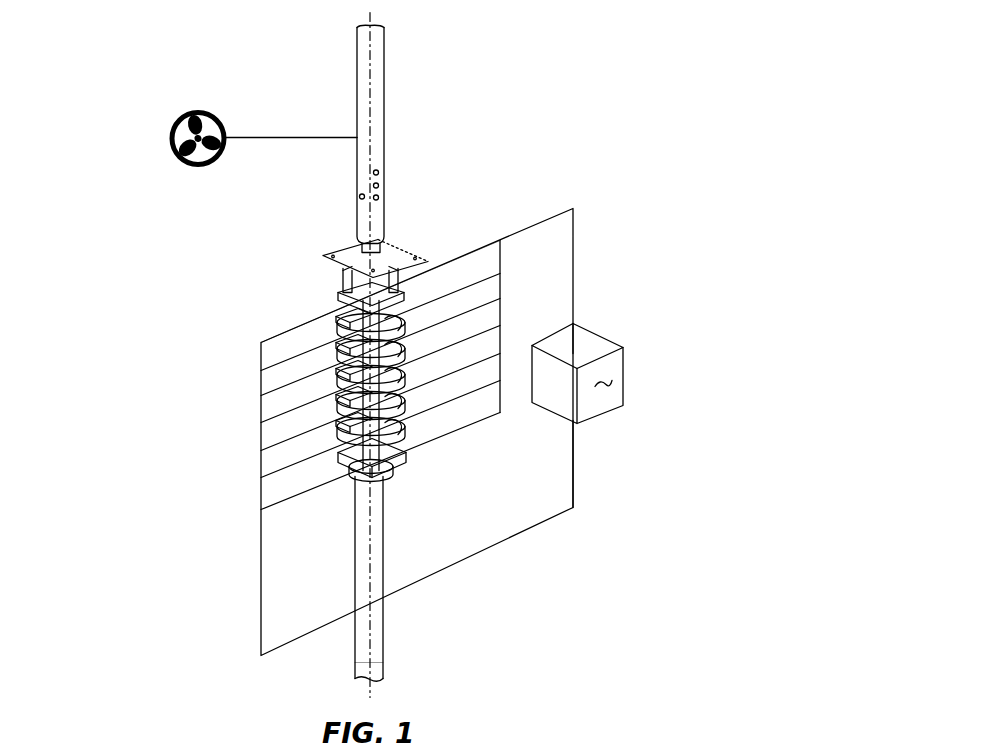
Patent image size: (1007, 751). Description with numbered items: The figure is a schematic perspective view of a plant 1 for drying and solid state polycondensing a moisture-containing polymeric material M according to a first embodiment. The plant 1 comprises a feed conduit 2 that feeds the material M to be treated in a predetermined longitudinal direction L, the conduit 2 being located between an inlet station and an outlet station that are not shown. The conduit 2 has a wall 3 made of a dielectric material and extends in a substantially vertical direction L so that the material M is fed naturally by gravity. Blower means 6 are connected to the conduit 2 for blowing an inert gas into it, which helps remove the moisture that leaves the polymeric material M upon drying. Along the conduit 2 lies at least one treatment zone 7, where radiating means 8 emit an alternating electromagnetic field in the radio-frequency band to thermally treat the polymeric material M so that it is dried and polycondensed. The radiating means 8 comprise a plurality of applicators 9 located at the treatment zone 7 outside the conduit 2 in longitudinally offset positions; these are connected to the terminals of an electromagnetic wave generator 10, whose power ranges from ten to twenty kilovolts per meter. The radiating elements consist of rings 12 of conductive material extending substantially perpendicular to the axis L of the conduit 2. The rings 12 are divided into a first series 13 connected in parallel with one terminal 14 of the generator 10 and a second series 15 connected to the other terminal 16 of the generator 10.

The plant 1 is at (592, 120).
The feed conduit 2 is at (386, 128).
The wall 3 is at (385, 667).
The blower means 6 is at (172, 115).
The treatment zone 7 is at (285, 288).
The radiating means 8 is at (418, 452).
The applicators 9 is at (323, 433).
The electromagnetic wave generator 10 is at (636, 371).
The rings 12 is at (418, 330).
The first series 13 is at (453, 410).
The terminal 14 is at (573, 353).
The second series 15 is at (253, 437).
The terminal 16 is at (577, 424).
The polymeric material M is at (379, 192).
The longitudinal direction L is at (355, 661).